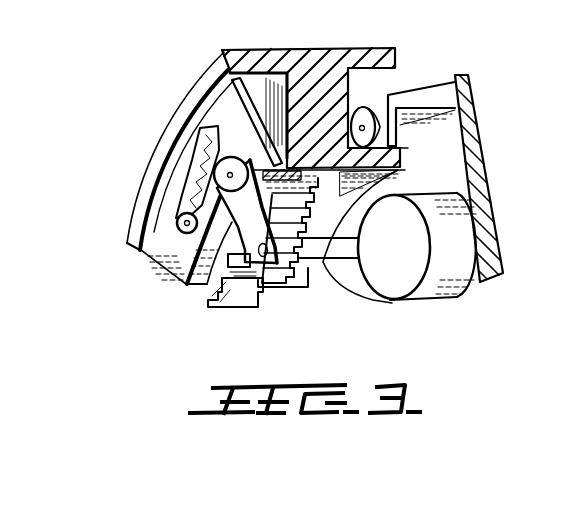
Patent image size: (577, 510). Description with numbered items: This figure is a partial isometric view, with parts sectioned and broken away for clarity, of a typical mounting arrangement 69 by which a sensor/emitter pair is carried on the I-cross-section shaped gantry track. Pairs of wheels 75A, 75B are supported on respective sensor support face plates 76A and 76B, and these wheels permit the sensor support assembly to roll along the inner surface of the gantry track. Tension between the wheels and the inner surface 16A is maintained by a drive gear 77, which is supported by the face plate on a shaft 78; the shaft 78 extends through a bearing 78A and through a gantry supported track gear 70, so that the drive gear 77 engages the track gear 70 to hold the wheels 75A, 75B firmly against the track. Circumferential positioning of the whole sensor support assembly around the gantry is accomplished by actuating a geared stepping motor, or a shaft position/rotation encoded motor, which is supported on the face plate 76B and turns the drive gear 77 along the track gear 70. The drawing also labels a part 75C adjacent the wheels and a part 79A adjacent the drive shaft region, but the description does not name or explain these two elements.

The mounting arrangement 69 is at (174, 355).
The gantry supported track gear 70 is at (232, 312).
The inner surface 16A is at (178, 272).
The wheel 75A is at (183, 262).
The wheel 75B is at (190, 168).
The bracket 75C is at (350, 103).
The sensor support face plate 76A is at (217, 112).
The sensor support face plate 76B is at (485, 170).
The drive gear 77 is at (298, 288).
The shaft 78 is at (355, 273).
The bearing 78A is at (235, 262).
The shaft 79A is at (433, 299).